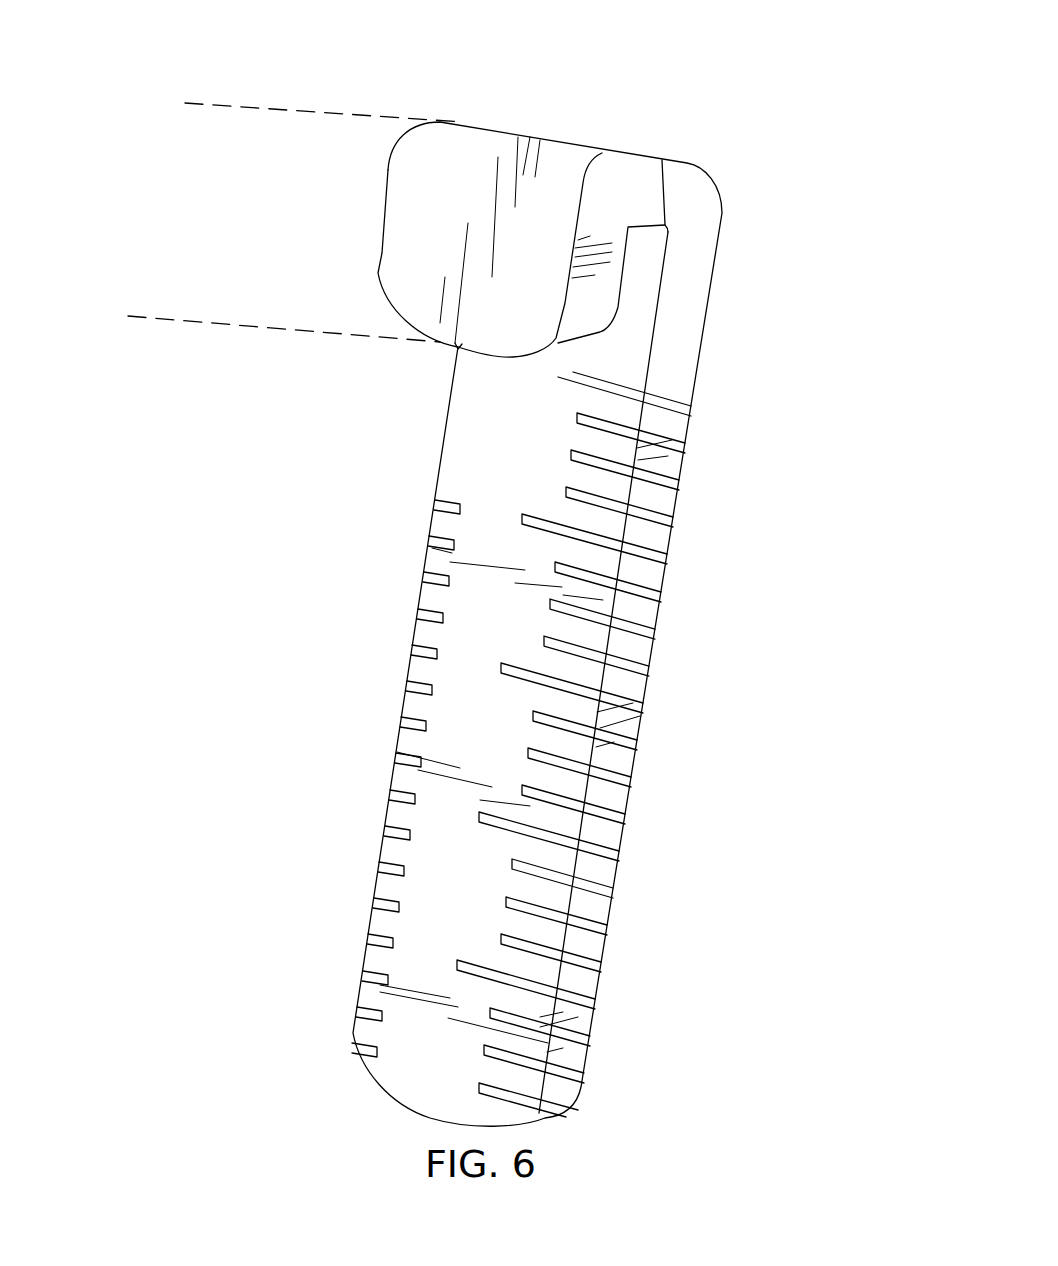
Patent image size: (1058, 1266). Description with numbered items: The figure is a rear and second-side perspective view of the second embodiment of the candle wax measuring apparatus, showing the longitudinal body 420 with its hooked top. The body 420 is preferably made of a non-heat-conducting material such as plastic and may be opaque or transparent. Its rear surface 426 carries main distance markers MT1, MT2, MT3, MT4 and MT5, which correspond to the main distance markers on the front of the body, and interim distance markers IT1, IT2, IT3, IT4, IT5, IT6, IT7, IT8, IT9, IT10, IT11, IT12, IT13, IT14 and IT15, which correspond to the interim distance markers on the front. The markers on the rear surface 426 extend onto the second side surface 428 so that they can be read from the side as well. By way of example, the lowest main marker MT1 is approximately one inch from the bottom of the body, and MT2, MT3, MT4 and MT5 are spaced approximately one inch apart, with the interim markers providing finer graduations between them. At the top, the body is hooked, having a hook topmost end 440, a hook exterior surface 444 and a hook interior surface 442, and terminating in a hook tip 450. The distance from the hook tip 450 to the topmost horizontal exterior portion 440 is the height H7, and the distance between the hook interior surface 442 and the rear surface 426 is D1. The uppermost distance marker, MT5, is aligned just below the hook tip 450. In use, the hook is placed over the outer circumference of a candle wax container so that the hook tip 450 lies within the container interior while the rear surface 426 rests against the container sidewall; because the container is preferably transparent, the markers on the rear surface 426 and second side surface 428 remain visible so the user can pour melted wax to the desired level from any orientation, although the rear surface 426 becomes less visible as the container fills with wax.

The longitudinal body 420 is at (405, 73).
The rear surface 426 is at (380, 870).
The second side surface 428 is at (655, 568).
The hook topmost end 440 is at (642, 152).
The hook interior surface 442 is at (662, 160).
The hook exterior surface 444 is at (382, 249).
The hook tip 450 is at (457, 350).
The distance between interior surface and rear surface D1 is at (640, 265).
The height from hook tip to topmost horizontal exterior portion H7 is at (275, 115).
The interim distance marker IT1 is at (579, 1117).
The interim distance marker IT2 is at (585, 1080).
The interim distance marker IT3 is at (591, 1043).
The interim distance marker IT4 is at (602, 969).
The interim distance marker IT5 is at (608, 932).
The interim distance marker IT6 is at (614, 895).
The interim distance marker IT7 is at (626, 821).
The interim distance marker IT8 is at (632, 784).
The interim distance marker IT9 is at (638, 747).
The interim distance marker IT10 is at (650, 673).
The interim distance marker IT11 is at (656, 636).
The interim distance marker IT12 is at (662, 599).
The interim distance marker IT13 is at (674, 524).
The interim distance marker IT14 is at (680, 487).
The interim distance marker IT15 is at (686, 450).
The main distance marker MT1 is at (463, 963).
The main distance marker MT2 is at (490, 814).
The main distance marker MT3 is at (512, 667).
The main distance marker MT4 is at (546, 521).
The main distance marker MT5 is at (652, 392).